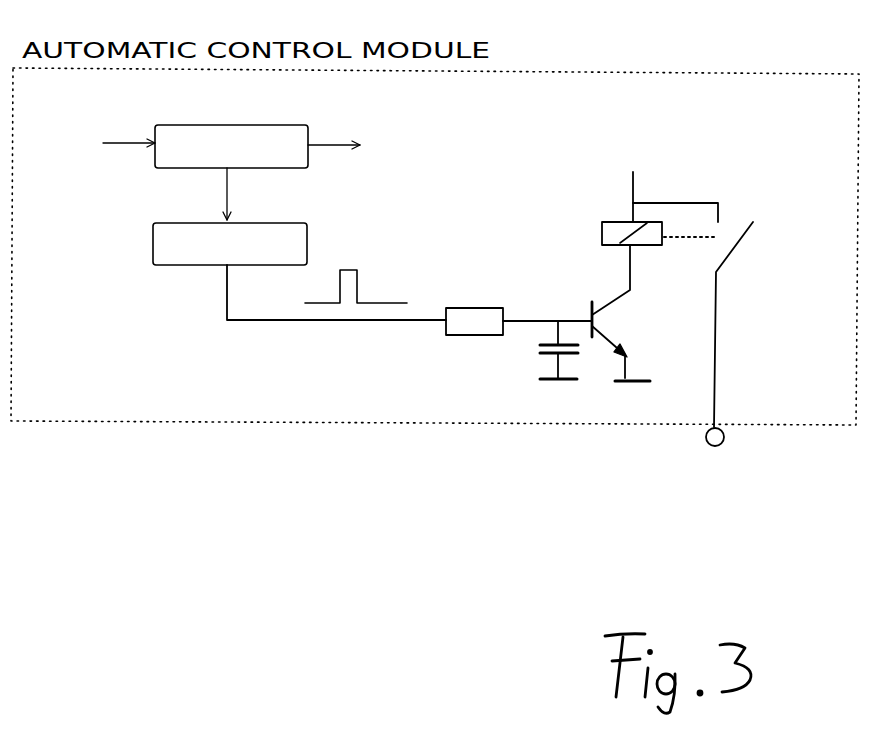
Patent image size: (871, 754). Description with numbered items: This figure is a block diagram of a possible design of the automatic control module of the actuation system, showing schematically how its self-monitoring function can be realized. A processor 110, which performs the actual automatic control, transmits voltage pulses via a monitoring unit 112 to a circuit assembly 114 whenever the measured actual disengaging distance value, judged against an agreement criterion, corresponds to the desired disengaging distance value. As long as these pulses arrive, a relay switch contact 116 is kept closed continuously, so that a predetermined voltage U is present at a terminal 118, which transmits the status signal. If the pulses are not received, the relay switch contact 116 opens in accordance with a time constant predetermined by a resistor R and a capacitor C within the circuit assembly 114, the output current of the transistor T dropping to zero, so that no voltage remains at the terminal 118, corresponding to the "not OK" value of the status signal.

The processor 110 is at (295, 133).
The monitoring unit 112 is at (303, 223).
The circuit assembly 114 is at (540, 255).
The relay switch contact 116 is at (737, 247).
The terminal 118 is at (712, 446).